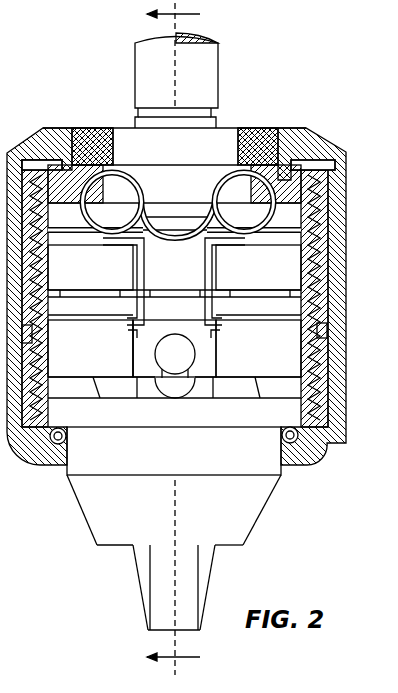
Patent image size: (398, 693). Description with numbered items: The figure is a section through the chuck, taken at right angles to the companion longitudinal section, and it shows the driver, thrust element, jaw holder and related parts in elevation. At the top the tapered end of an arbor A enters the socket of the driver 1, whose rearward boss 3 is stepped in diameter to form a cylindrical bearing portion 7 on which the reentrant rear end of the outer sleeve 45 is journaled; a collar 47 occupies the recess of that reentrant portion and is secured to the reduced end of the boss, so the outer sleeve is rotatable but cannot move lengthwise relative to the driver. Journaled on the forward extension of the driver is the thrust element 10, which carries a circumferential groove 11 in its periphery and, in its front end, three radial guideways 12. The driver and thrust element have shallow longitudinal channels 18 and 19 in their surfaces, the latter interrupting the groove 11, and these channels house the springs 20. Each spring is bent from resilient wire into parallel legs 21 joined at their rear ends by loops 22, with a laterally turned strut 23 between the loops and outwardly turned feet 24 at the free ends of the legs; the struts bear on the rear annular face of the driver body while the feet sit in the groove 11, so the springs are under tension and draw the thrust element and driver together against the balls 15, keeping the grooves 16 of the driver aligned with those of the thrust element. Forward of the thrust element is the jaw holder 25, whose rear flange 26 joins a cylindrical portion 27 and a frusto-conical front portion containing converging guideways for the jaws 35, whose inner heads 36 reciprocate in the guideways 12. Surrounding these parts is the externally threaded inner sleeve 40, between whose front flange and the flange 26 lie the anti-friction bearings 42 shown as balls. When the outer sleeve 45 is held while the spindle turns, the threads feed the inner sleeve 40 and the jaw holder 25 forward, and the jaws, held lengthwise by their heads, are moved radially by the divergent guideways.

The driver 1 is at (355, 250).
The arbor A is at (205, 58).
The boss 3 is at (201, 145).
The cylindrical bearing portion 7 is at (173, 183).
The thrust element 10 is at (278, 337).
The circumferential groove 11 is at (72, 320).
The radial guideways 12 is at (190, 340).
The balls 15 is at (187, 297).
The grooves 16 is at (260, 273).
The longitudinal channels 18 is at (134, 268).
The longitudinal channels 19 is at (133, 362).
The springs 20 is at (128, 177).
The legs 21 is at (141, 270).
The loops 22 is at (86, 211).
The strut 23 is at (143, 222).
The feet 24 is at (182, 336).
The jaw holder 25 is at (258, 500).
The rear flange 26 is at (205, 412).
The cylindrical portion 27 is at (203, 453).
The jaws 35 is at (122, 388).
The heads 36 is at (182, 357).
The inner sleeve 40 is at (325, 370).
The anti-friction bearings 42 is at (291, 434).
The outer sleeve 45 is at (325, 236).
The collar 47 is at (256, 138).